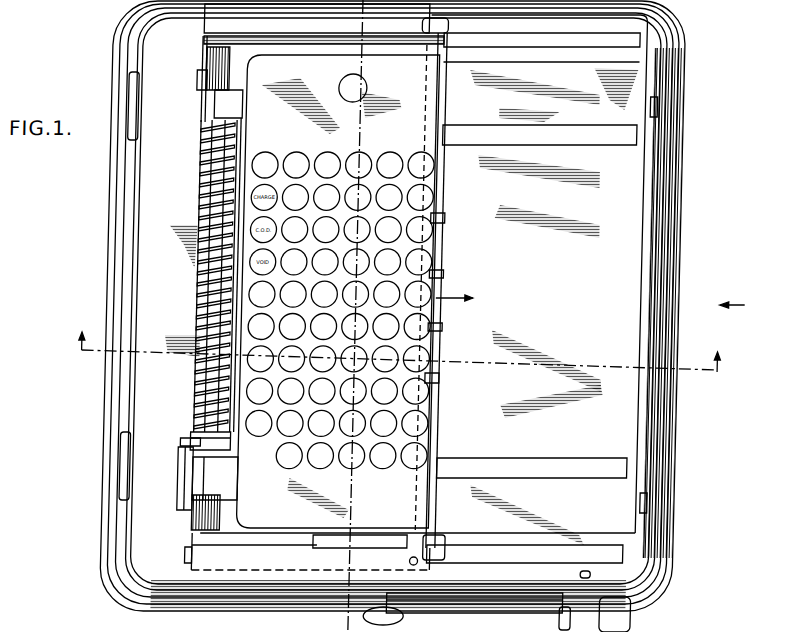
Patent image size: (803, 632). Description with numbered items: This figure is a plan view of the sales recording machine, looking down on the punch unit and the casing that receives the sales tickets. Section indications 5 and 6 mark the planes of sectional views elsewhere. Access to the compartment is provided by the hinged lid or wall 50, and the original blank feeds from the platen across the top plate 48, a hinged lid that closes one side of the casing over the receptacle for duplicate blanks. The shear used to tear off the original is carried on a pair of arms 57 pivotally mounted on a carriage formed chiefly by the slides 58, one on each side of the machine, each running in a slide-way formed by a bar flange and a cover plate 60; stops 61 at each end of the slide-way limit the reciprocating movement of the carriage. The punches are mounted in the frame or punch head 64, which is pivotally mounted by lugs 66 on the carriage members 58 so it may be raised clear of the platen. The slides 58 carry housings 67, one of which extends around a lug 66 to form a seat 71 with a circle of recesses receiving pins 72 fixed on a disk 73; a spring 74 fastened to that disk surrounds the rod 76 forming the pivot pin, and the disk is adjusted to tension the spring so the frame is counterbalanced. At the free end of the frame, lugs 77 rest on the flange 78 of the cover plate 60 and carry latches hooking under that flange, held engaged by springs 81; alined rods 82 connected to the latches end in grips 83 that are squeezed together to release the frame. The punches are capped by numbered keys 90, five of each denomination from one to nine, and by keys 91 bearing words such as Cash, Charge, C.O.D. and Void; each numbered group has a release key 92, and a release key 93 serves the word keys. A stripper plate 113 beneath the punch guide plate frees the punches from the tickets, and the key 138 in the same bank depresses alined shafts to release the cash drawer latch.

The section line 5- 5 is at (398, 361).
The direction arrow 6 is at (740, 305).
The top plate 48 is at (547, 246).
The hinged lid 50 is at (167, 304).
The arms 57 is at (378, 540).
The slides 58 is at (264, 540).
The cover plate 60 is at (306, 26).
The stops 61 is at (200, 553).
The punch head 64 is at (337, 291).
The lugs 66 is at (242, 113).
The housings 67 is at (210, 500).
The seat 71 is at (197, 449).
The pins 72 is at (192, 442).
The disk 73 is at (200, 436).
The spring 74 is at (206, 178).
The rod 76 is at (208, 320).
The lugs 77 is at (424, 25).
The flange 78 is at (495, 40).
The springs 81 is at (424, 562).
The rods 82 is at (446, 150).
The grips 83 is at (450, 272).
The numbered keys 90 is at (330, 158).
The word keys 91 is at (268, 160).
The release key 92 is at (418, 468).
The release key 93 is at (270, 398).
The stripper plate 113 is at (263, 433).
The cash drawer key 138 is at (370, 87).